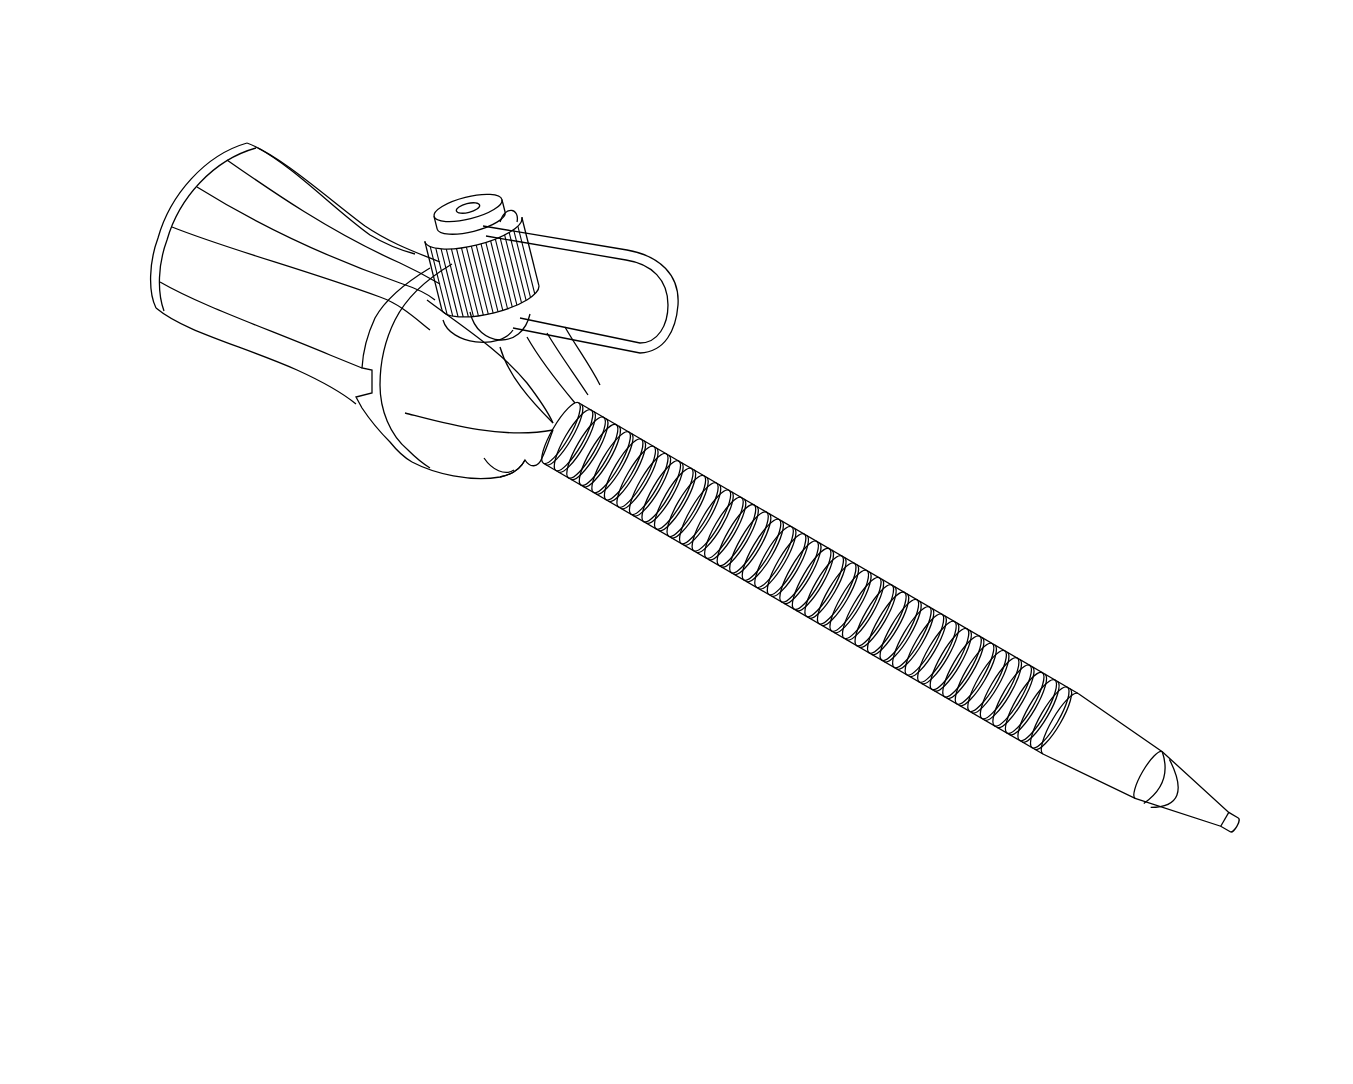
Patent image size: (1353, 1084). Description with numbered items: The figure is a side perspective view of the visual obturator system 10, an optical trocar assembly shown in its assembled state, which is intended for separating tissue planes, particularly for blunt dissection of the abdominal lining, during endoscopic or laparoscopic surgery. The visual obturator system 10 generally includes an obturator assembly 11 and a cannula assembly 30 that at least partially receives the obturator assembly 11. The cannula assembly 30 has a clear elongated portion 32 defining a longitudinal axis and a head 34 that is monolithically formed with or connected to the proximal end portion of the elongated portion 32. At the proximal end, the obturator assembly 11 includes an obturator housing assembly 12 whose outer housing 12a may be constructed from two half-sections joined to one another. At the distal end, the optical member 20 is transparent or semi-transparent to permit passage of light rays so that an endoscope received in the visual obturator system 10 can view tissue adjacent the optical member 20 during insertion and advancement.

The visual obturator system 10 is at (818, 294).
The obturator assembly 11 is at (262, 376).
The obturator housing assembly 12 is at (245, 143).
The outer housing 12a is at (293, 192).
The optical member 20 is at (1193, 790).
The cannula assembly 30 is at (656, 533).
The elongated portion 32 is at (745, 585).
The head 34 is at (483, 457).